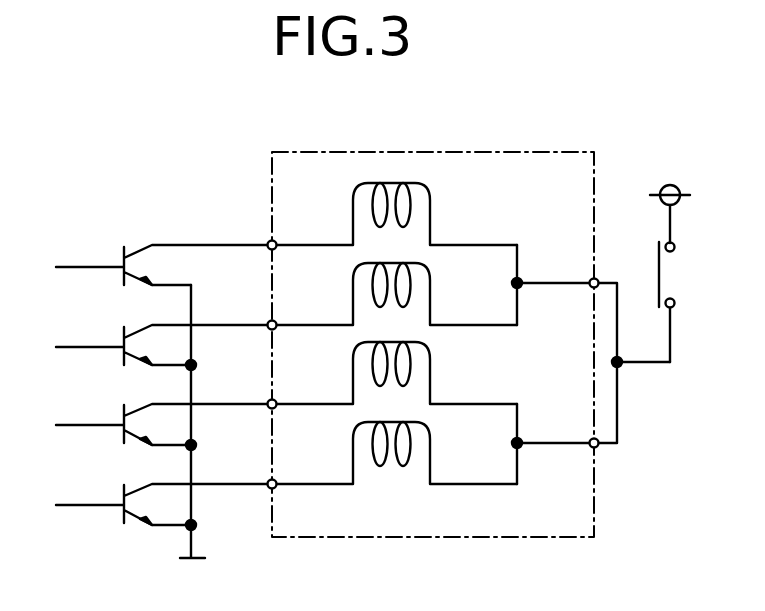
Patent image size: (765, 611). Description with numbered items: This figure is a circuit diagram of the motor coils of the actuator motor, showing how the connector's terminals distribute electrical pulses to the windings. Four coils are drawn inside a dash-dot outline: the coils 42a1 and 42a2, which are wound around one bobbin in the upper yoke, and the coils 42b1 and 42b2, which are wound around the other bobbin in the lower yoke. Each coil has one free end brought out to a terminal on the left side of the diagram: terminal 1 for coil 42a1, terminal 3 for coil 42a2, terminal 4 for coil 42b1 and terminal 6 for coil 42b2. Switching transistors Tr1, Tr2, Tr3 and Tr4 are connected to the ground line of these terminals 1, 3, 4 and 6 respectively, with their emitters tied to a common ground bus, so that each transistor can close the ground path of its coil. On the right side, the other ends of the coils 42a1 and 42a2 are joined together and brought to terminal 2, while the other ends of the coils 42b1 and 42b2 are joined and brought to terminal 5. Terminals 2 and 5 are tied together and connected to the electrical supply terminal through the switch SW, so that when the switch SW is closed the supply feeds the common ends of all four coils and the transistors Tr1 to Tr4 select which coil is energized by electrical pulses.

The switching transistor Tr1 is at (150, 264).
The switching transistor Tr2 is at (150, 344).
The switching transistor Tr3 is at (150, 422).
The switching transistor Tr4 is at (150, 502).
The coil 42a1 is at (468, 200).
The coil 42a2 is at (468, 280).
The coil 42b1 is at (468, 359).
The coil 42b2 is at (468, 439).
The terminal 1 is at (255, 230).
The terminal 2 is at (612, 265).
The terminal 3 is at (255, 310).
The terminal 4 is at (255, 389).
The terminal 5 is at (612, 460).
The terminal 6 is at (255, 469).
The switch SW is at (662, 274).